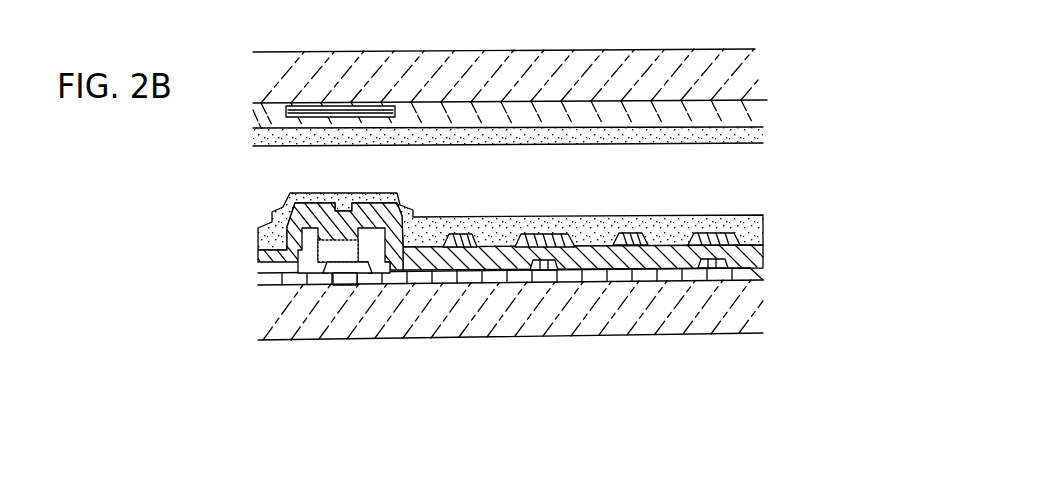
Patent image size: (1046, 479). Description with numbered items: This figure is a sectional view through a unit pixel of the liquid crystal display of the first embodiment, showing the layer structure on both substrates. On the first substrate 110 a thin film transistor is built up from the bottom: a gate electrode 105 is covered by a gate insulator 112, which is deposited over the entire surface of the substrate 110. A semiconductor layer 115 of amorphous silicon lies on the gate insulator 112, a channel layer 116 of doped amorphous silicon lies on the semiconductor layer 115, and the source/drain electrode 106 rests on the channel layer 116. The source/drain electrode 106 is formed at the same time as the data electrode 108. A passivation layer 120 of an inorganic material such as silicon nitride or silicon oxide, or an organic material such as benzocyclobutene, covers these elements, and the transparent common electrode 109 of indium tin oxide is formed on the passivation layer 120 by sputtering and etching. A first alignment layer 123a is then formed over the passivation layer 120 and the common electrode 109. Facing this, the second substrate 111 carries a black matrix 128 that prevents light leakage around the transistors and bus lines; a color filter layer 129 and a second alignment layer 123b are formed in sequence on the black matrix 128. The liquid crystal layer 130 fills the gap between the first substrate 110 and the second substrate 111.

The gate electrode 105 is at (340, 280).
The source/drain electrode 106 is at (372, 232).
The data electrode 108 is at (533, 270).
The common electrode 109 is at (455, 250).
The first substrate 110 is at (733, 313).
The second substrate 111 is at (723, 67).
The gate insulator 112 is at (743, 275).
The semiconductor layer 115 is at (305, 267).
The channel layer 116 is at (377, 267).
The passivation layer 120 is at (762, 260).
The first alignment layer 123a is at (742, 223).
The second alignment layer 123b is at (742, 138).
The black matrix 128 is at (343, 107).
The color filter layer 129 is at (737, 117).
The liquid crystal layer 130 is at (300, 173).